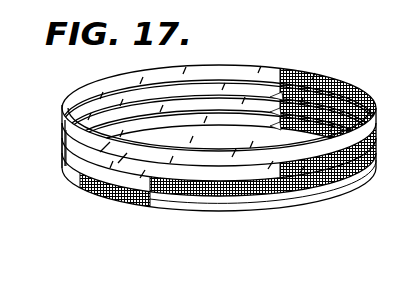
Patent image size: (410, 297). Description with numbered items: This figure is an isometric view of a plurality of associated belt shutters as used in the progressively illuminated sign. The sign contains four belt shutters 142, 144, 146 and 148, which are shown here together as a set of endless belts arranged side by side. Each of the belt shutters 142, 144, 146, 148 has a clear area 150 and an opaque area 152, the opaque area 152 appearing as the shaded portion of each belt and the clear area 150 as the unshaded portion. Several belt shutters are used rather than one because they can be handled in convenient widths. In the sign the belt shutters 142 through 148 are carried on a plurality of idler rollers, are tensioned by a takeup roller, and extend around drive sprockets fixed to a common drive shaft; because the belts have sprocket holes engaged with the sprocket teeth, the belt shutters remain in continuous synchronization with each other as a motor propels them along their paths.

The belt shutter 142 is at (253, 79).
The belt shutter 144 is at (192, 95).
The belt shutter 146 is at (335, 187).
The belt shutter 148 is at (287, 198).
The clear area 150 is at (90, 137).
The opaque area 152 is at (350, 97).